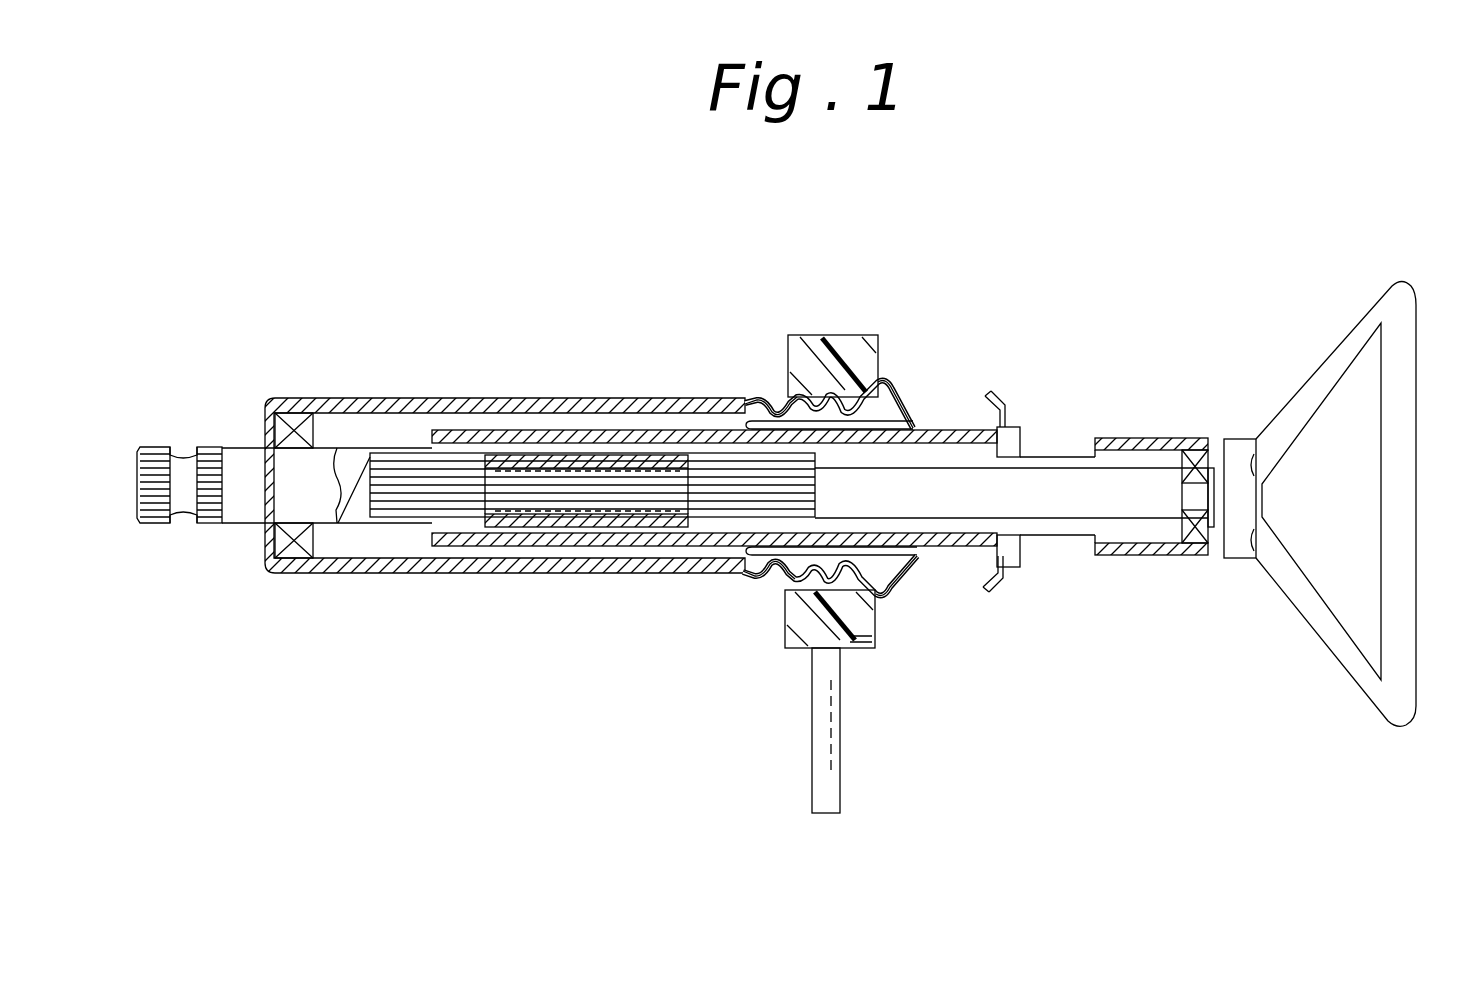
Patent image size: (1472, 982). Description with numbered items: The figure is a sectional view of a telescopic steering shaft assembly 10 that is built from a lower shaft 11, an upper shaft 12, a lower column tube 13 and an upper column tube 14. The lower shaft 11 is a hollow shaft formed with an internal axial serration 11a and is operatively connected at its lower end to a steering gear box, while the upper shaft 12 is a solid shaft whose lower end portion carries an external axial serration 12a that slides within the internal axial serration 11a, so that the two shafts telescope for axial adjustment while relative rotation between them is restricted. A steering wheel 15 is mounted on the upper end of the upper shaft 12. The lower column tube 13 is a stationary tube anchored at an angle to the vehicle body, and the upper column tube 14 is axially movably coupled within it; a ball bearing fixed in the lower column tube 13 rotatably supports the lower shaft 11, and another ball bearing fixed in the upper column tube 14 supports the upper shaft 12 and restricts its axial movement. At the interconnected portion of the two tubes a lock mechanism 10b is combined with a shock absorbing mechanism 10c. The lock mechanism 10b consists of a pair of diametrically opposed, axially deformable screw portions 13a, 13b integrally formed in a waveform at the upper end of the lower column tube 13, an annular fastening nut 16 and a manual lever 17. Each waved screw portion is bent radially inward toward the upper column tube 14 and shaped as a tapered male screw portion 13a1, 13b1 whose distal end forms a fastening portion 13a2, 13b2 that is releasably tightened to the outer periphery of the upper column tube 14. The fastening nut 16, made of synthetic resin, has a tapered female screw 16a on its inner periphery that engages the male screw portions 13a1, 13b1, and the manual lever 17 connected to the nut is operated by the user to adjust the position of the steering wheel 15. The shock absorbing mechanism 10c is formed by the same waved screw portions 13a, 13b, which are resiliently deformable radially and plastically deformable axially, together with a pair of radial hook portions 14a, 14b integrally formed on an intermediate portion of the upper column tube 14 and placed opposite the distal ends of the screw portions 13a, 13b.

The steering shaft assembly 10 is at (240, 527).
The lock mechanism 10b is at (785, 373).
The shock absorbing mechanism 10c is at (831, 551).
The lower shaft 11 is at (153, 455).
The internal axial serration 11a is at (410, 500).
The upper shaft 12 is at (1135, 510).
The external axial serration 12a is at (720, 497).
The lower column tube 13 is at (332, 405).
The deformable screw portion 13a is at (898, 390).
The tapered male screw portion 13a1 is at (837, 383).
The fastening portion 13a2 is at (942, 428).
The deformable screw portion 13b is at (900, 600).
The tapered male screw portion 13b1 is at (810, 587).
The fastening portion 13b2 is at (942, 580).
The upper column tube 14 is at (1177, 438).
The radial hook portion 14a is at (1003, 408).
The radial hook portion 14b is at (997, 573).
The steering wheel 15 is at (1407, 351).
The annular fastening nut 16 is at (858, 335).
The tapered female screw 16a is at (860, 617).
The manual lever 17 is at (837, 770).